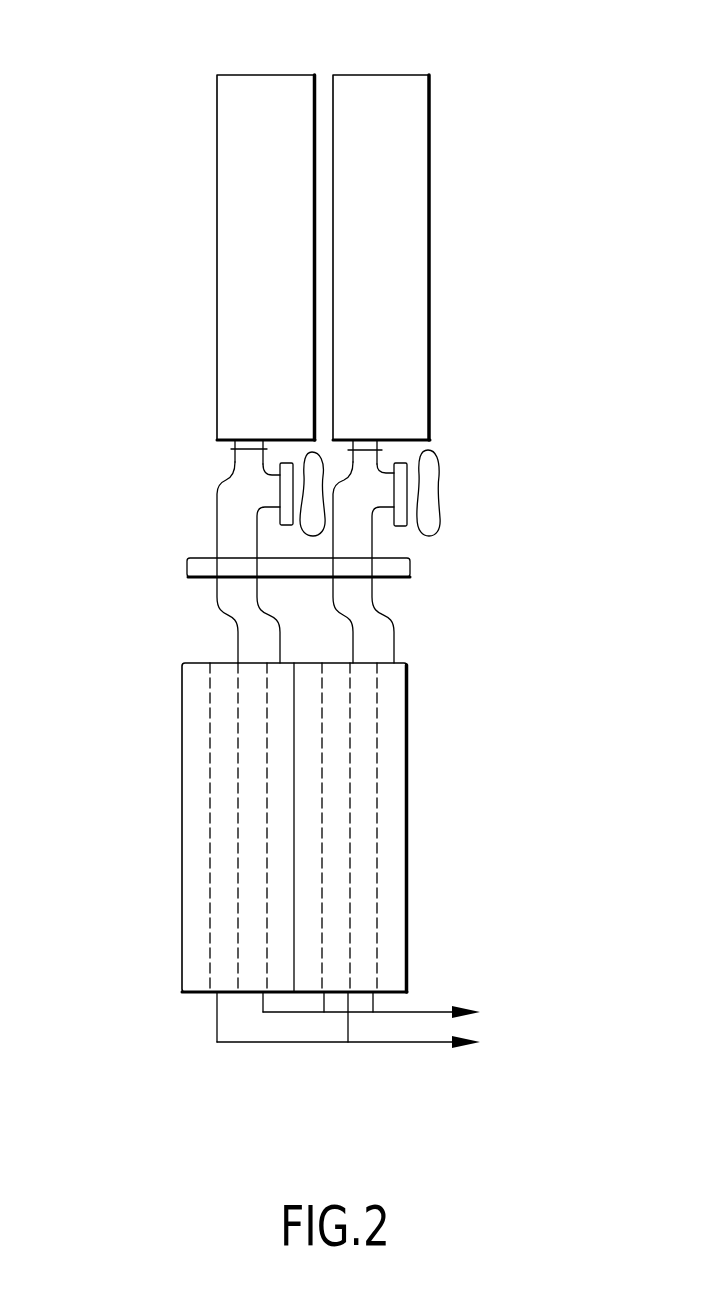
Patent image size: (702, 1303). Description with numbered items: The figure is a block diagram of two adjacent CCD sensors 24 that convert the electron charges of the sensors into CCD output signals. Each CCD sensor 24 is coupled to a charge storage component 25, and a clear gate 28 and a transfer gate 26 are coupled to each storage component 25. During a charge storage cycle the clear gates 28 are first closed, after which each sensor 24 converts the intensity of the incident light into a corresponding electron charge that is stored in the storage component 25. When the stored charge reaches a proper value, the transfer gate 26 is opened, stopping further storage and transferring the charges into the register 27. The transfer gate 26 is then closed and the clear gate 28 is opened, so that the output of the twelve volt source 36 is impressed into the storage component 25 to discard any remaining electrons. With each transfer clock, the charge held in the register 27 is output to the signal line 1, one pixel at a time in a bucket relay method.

The signal line 1 is at (425, 1012).
The CCD sensor 24 is at (243, 280).
The charge storage component 25 is at (212, 525).
The transfer gate 26 is at (406, 564).
The register 27 is at (190, 773).
The clear gate 28 is at (280, 486).
The 12 volt source 36 is at (311, 456).